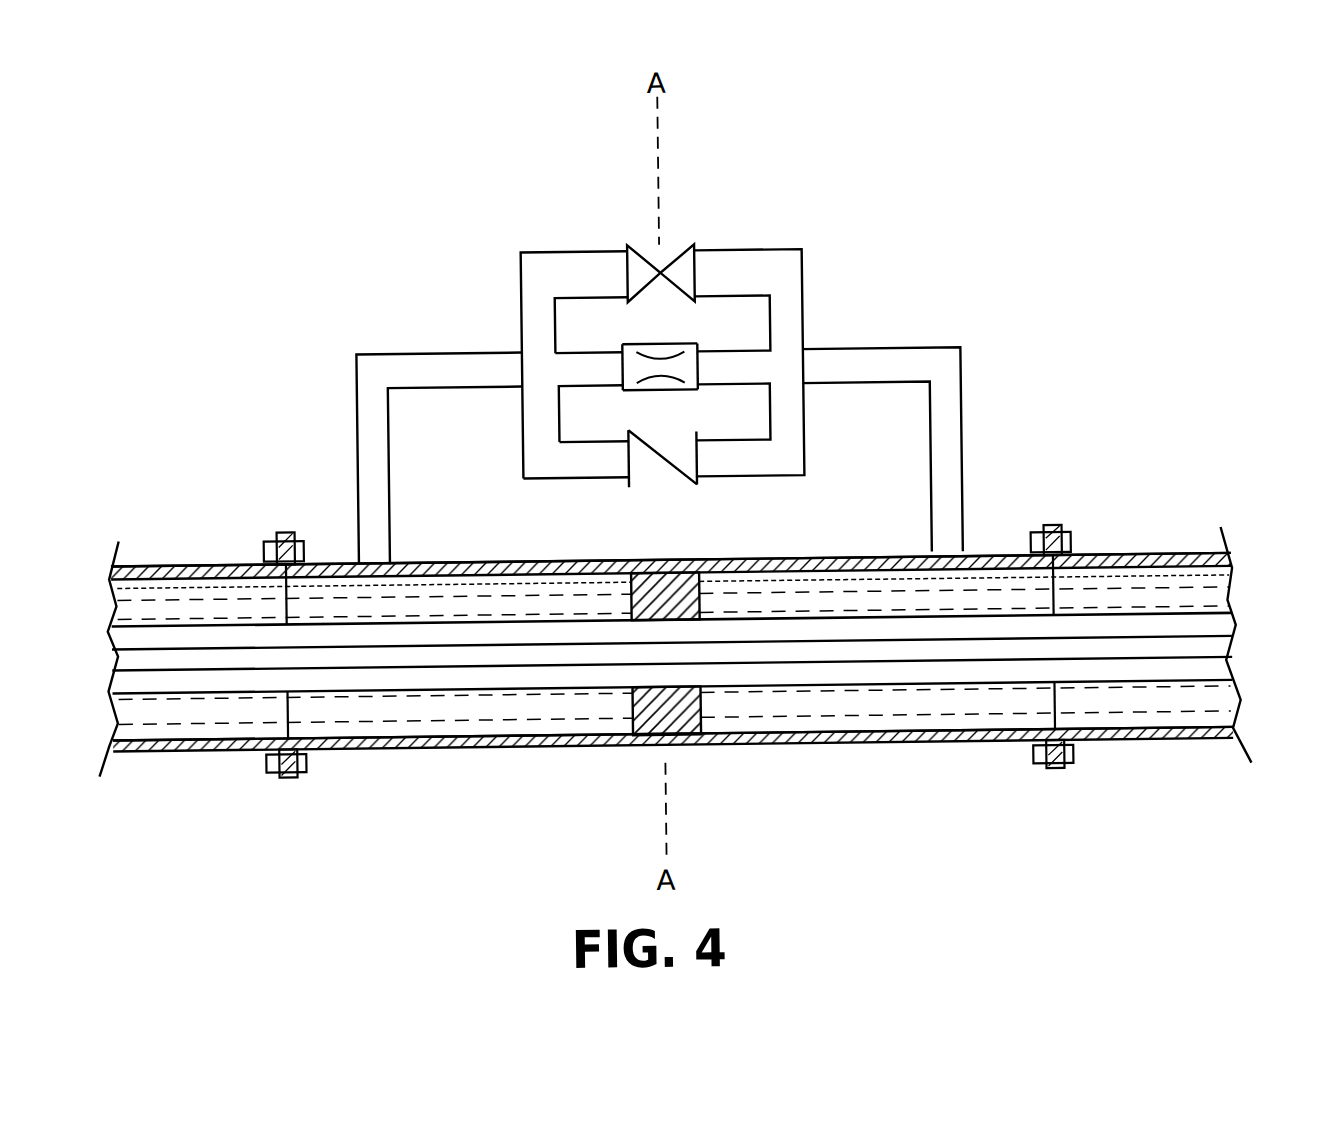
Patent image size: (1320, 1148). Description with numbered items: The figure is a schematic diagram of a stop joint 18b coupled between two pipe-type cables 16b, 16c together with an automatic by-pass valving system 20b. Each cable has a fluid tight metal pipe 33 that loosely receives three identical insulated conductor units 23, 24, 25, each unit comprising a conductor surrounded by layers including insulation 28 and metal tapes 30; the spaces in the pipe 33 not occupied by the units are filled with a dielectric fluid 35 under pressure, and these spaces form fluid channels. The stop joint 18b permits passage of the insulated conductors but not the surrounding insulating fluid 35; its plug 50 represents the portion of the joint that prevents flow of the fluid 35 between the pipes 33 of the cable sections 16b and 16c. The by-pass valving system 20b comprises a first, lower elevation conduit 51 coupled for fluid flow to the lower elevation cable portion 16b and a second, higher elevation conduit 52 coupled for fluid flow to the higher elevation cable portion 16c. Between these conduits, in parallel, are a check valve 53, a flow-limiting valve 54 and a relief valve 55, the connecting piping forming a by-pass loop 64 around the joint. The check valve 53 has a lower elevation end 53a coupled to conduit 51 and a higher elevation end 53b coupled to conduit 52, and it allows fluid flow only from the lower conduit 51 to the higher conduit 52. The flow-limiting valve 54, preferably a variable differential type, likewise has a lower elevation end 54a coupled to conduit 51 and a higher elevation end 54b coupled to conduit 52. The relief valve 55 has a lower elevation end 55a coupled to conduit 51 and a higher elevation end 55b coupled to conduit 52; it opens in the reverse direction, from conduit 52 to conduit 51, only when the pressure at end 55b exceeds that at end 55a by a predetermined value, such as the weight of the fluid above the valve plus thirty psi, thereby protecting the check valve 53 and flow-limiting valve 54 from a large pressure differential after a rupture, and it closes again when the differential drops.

The pipe-type cable 16b is at (1134, 568).
The pipe-type cable 16c is at (151, 571).
The stop joint 18b is at (891, 756).
The automatic by-pass valving system 20b is at (707, 175).
The cable unit 23 is at (1222, 632).
The cable unit 24 is at (1222, 657).
The cable unit 25 is at (1225, 675).
The insulation 28 is at (779, 712).
The metal tapes 30 is at (181, 721).
The metal pipe 33 is at (201, 576).
The dielectric fluid 35 is at (1118, 586).
The plug 50 is at (685, 748).
The first conduit 51 is at (965, 446).
The second conduit 52 is at (361, 423).
The check valve 53 is at (665, 466).
The lower elevation end 53a is at (699, 458).
The higher elevation end 53b is at (630, 458).
The flow-limiting valve 54 is at (663, 362).
The lower elevation end 54a is at (695, 368).
The higher elevation end 54b is at (626, 372).
The relief valve 55 is at (649, 241).
The lower elevation end 55a is at (705, 264).
The higher elevation end 55b is at (623, 267).
The bypass conduit 64 is at (525, 278).